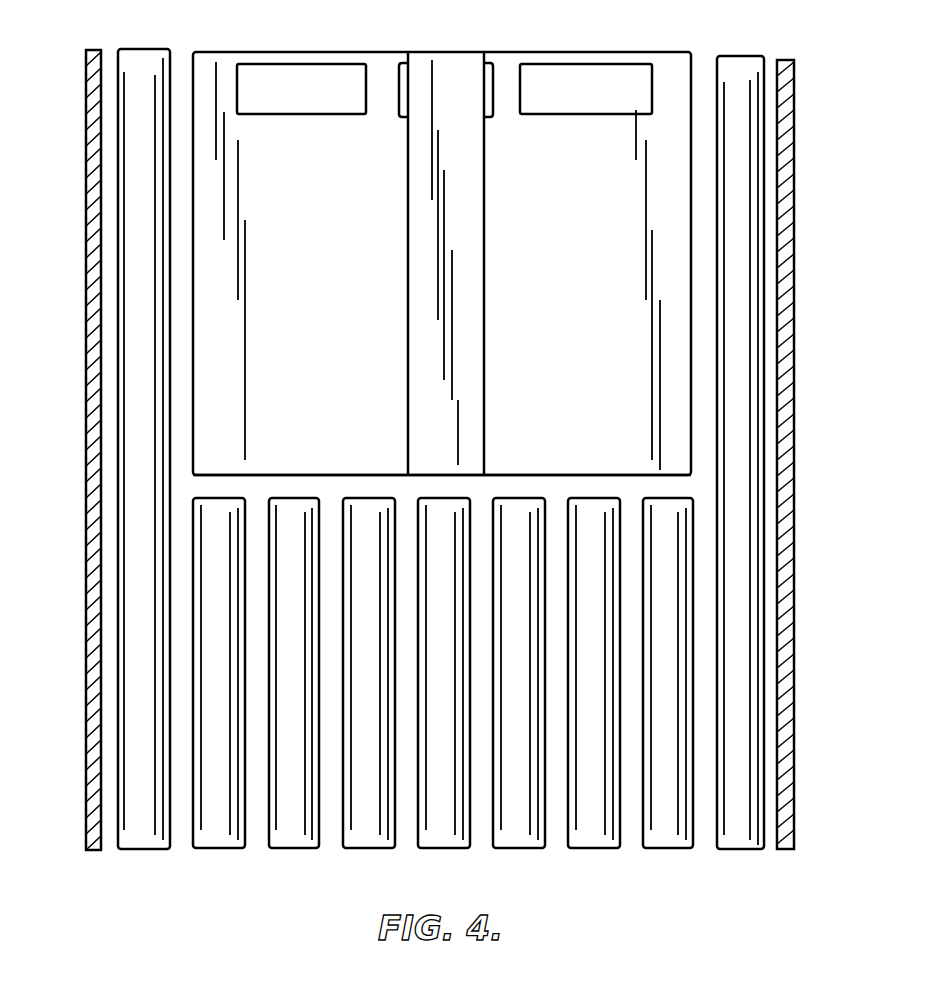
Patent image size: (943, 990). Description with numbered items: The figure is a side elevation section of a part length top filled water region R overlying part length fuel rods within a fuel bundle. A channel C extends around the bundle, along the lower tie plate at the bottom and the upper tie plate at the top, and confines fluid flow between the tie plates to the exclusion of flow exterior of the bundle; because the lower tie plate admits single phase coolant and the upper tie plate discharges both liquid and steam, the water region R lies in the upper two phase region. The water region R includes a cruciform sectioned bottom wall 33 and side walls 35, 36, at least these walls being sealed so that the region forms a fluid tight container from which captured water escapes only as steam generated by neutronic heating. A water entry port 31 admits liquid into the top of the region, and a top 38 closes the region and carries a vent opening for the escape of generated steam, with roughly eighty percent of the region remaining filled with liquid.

The channel C is at (86, 442).
The top 38 is at (521, 52).
The side wall 36 is at (449, 439).
The side wall 35 is at (596, 441).
The part length water region R is at (583, 363).
The water entry port 31 is at (398, 88).
The bottom wall 33 is at (633, 477).